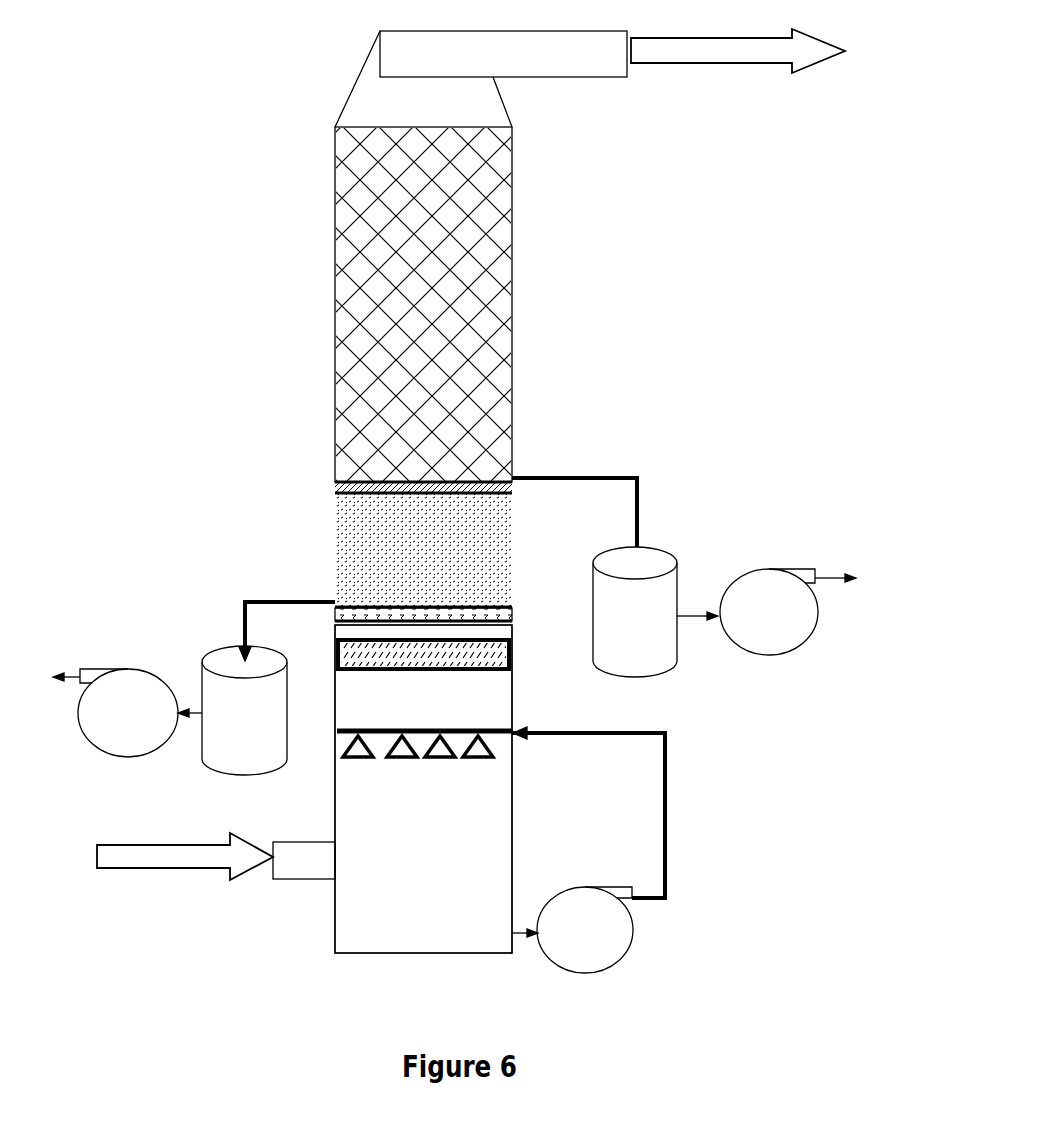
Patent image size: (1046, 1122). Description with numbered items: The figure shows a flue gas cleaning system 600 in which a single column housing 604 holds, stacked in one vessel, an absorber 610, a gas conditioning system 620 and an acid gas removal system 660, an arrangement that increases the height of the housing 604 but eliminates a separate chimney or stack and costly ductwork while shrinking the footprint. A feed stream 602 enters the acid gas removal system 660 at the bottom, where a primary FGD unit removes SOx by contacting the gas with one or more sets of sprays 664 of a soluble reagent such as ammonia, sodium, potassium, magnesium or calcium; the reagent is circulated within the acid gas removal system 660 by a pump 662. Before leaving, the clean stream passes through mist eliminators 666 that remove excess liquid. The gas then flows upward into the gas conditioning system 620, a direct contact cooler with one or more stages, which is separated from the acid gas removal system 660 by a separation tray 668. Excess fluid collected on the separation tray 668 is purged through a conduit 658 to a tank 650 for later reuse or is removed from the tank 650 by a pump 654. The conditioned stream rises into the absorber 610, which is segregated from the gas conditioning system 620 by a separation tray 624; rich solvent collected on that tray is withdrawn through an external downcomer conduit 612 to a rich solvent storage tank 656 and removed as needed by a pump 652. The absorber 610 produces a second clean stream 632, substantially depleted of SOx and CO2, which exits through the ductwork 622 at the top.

The flue gas cleaning system 600 is at (693, 270).
The feed stream 602 is at (188, 856).
The column housing 604 is at (332, 298).
The absorber 610 is at (423, 304).
The external downcomer conduit 612 is at (622, 468).
The gas conditioning system 620 is at (423, 550).
The ductwork 622 is at (503, 54).
The separation tray 624 is at (375, 479).
The second clean stream 632 is at (742, 38).
The tank 650 is at (232, 710).
The pump 652 is at (788, 612).
The pump 654 is at (115, 713).
The rich solvent storage tank 656 is at (655, 612).
The conduit 658 is at (232, 622).
The acid gas removal system 660 is at (423, 789).
The pump 662 is at (588, 850).
The sprays 664 is at (381, 760).
The mist eliminators 666 is at (524, 670).
The separation tray 668 is at (390, 600).